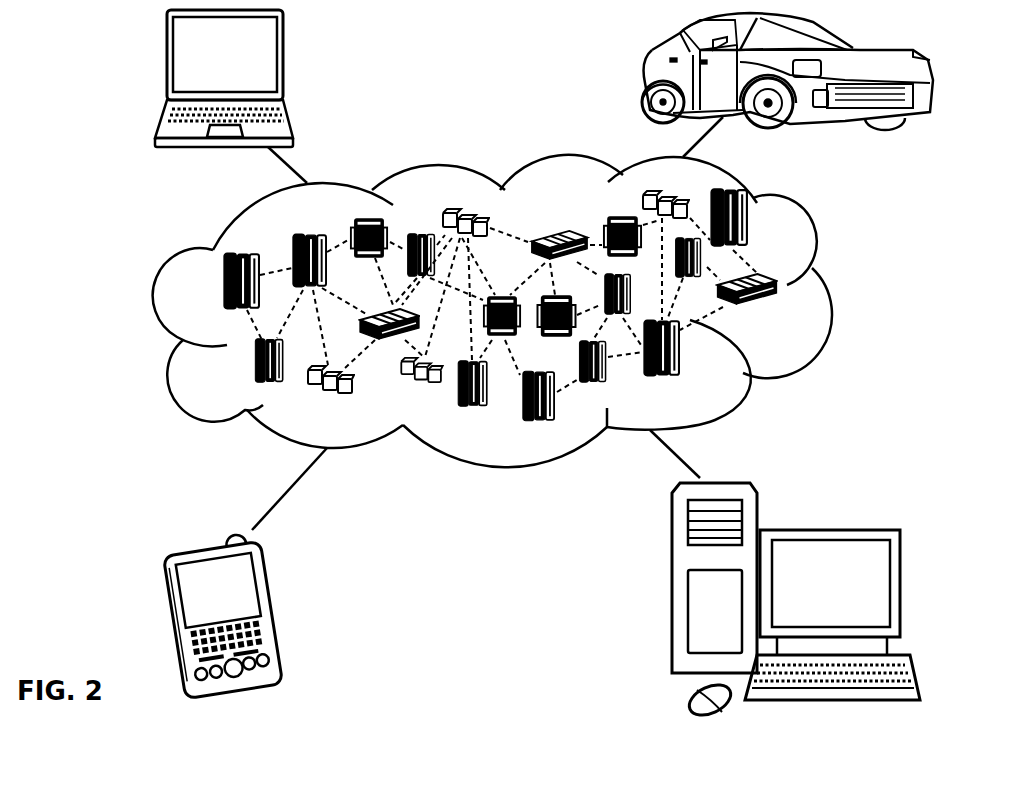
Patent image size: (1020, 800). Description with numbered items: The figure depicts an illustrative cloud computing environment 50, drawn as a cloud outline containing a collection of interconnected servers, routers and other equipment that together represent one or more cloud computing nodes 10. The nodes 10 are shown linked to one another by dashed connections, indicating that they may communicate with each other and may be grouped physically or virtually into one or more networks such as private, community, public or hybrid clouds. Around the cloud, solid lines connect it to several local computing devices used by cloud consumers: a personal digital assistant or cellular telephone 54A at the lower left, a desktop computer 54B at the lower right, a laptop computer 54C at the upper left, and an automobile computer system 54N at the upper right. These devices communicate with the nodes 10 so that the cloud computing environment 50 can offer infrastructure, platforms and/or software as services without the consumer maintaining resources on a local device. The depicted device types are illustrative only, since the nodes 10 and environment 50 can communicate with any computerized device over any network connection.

The cloud computing nodes 10 is at (787, 317).
The cloud computing environment 50 is at (823, 290).
The personal digital assistant or cellular telephone 54A is at (275, 608).
The desktop computer 54B is at (830, 528).
The laptop computer 54C is at (283, 62).
The automobile computer system 54N is at (647, 78).